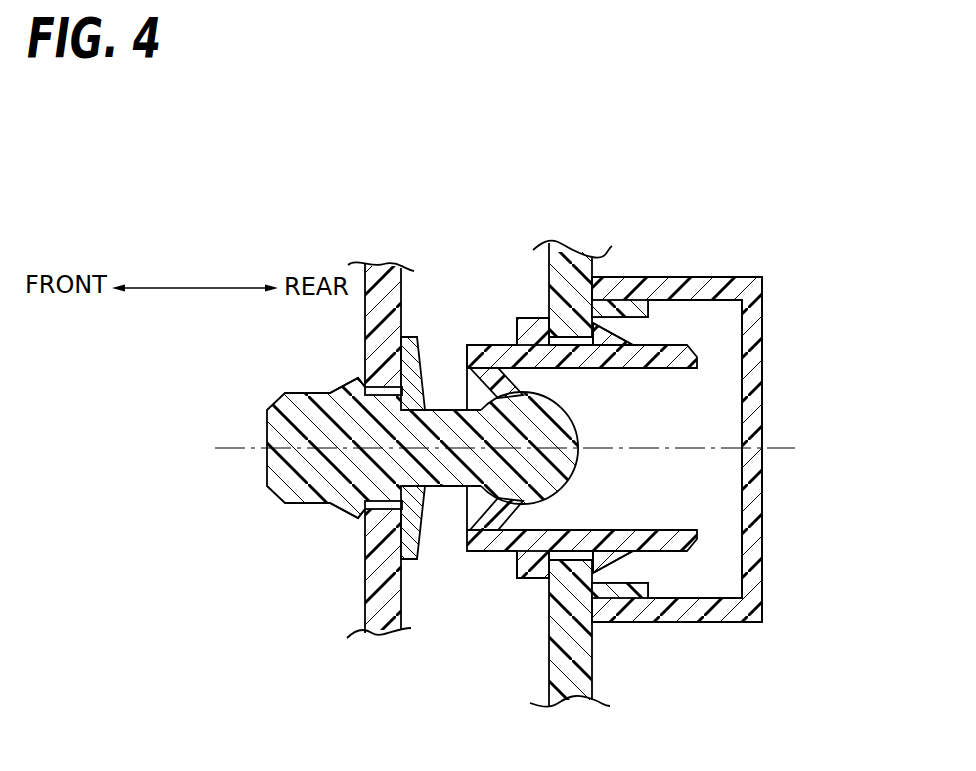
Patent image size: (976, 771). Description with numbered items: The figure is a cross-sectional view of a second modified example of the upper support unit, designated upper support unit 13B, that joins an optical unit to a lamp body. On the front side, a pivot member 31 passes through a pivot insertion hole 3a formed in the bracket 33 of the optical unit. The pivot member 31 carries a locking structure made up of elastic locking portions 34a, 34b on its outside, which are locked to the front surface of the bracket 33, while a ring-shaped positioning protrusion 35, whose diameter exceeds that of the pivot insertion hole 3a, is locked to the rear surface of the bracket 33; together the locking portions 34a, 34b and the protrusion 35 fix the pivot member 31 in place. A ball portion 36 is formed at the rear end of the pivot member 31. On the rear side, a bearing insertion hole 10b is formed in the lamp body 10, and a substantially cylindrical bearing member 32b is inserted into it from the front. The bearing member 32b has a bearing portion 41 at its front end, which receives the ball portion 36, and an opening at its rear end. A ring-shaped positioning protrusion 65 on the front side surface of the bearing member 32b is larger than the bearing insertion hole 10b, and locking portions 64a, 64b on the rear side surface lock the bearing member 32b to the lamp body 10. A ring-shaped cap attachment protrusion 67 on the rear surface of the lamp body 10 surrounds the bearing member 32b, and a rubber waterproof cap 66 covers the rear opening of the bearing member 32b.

The pivot member 31 is at (297, 416).
The locking portion 34b is at (353, 384).
The locking portion 34a is at (348, 506).
The ball portion 36 is at (567, 415).
The pivot insertion hole 3a is at (383, 567).
The positioning protrusion 35 is at (418, 537).
The bracket 33 is at (368, 566).
The bearing portion 41 is at (480, 525).
The bearing member 32b is at (502, 346).
The positioning protrusion 65 is at (535, 318).
The locking portion 64b is at (607, 338).
The locking portion 64a is at (625, 560).
The lamp body 10 is at (558, 657).
The bearing insertion hole 10b is at (540, 568).
The upper support unit 13B is at (650, 238).
The waterproof cap 66 is at (757, 551).
The cap attachment protrusion 67 is at (632, 590).